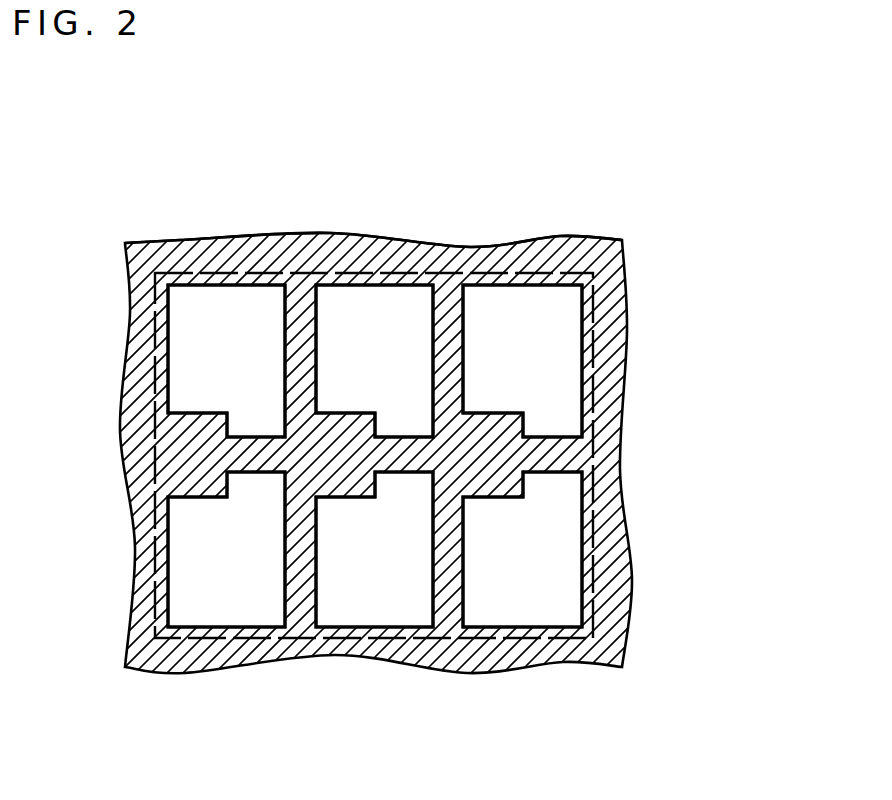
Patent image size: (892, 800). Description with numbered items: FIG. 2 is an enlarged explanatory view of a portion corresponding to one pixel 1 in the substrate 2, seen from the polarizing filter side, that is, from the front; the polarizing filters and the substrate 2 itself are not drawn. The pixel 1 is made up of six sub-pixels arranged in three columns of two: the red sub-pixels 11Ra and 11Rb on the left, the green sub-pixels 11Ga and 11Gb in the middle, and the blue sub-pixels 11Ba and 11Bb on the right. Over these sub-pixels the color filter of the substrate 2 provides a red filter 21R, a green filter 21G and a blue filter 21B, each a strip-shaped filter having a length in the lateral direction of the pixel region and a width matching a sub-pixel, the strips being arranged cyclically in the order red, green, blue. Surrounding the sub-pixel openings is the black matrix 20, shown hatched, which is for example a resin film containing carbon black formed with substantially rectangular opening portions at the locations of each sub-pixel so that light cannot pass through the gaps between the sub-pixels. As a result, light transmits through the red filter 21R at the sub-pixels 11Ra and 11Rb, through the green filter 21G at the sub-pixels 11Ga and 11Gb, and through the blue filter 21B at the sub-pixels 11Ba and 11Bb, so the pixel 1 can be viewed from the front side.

The pixel 1 is at (180, 248).
The substrate 2 is at (603, 232).
The black matrix 20 is at (182, 457).
The red sub-pixel 11Ra is at (190, 355).
The red sub-pixel 11Rb is at (200, 567).
The green sub-pixel 11Ga is at (410, 312).
The green sub-pixel 11Gb is at (375, 590).
The blue sub-pixel 11Ba is at (563, 340).
The blue sub-pixel 11Bb is at (558, 560).
The red filter 21R is at (255, 522).
The green filter 21G is at (383, 520).
The blue filter 21B is at (543, 515).